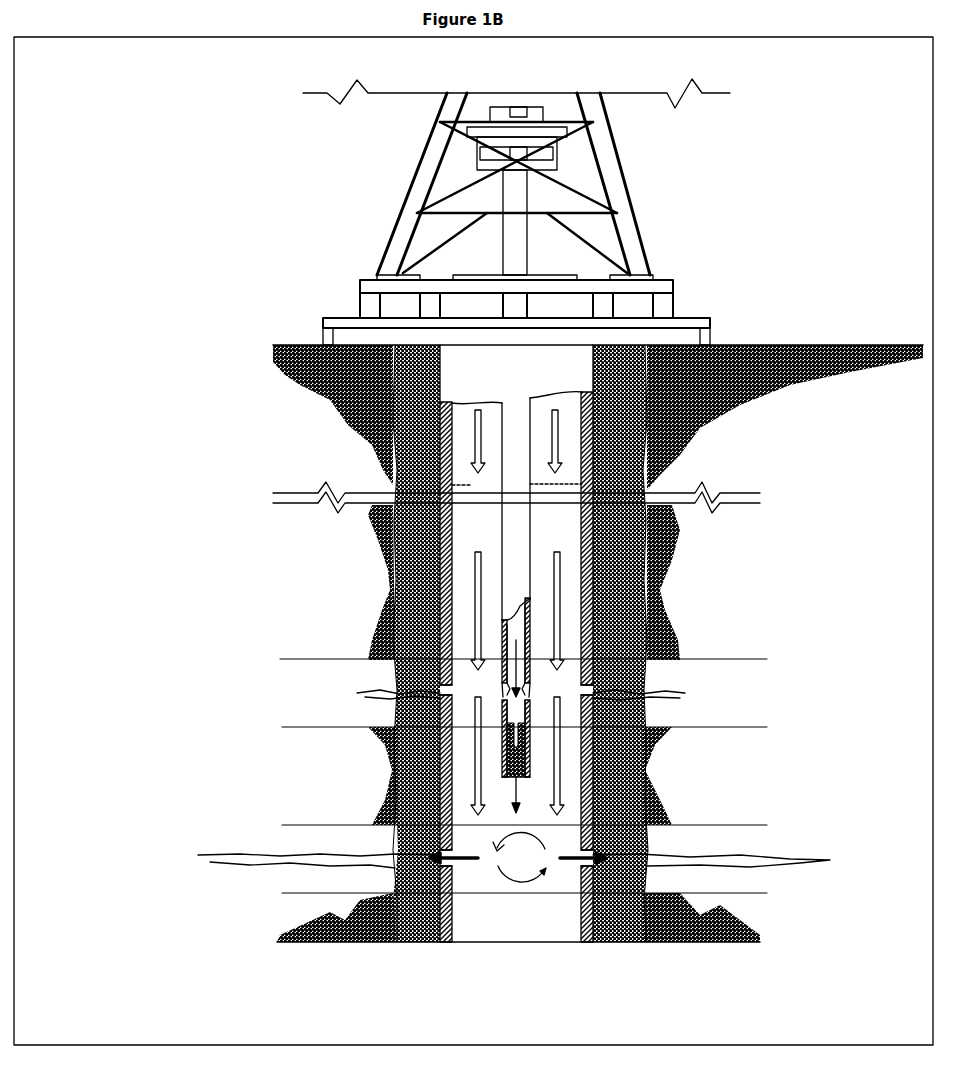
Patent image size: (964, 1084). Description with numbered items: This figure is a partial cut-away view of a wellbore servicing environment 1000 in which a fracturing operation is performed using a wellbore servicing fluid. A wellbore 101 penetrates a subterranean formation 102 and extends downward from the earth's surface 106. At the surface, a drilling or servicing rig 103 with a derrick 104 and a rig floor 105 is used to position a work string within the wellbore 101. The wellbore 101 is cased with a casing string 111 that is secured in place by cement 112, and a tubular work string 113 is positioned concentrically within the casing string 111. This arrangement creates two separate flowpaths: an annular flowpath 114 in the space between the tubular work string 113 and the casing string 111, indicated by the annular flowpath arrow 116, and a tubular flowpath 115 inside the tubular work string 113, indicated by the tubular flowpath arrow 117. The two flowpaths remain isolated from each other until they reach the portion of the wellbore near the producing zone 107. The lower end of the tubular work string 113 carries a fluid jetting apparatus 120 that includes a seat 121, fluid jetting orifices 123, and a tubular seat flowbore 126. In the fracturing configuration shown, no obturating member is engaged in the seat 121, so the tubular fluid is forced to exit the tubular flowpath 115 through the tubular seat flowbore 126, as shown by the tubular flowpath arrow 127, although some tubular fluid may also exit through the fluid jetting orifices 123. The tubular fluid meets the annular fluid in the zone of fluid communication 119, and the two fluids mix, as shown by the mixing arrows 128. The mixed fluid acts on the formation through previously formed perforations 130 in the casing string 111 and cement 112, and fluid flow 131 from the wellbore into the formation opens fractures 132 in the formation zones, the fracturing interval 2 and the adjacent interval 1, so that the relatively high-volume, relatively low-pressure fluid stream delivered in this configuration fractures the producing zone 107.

The well system 1000 is at (222, 129).
The wellbore 101 is at (395, 578).
The subterranean formation 102 is at (822, 428).
The drilling or servicing rig 103 is at (564, 184).
The derrick 104 is at (392, 162).
The rig floor 105 is at (688, 317).
The earth's surface 106 is at (863, 345).
The producing zone 107 is at (190, 800).
The casing string 111 is at (450, 425).
The cement 112 is at (403, 387).
The tubular work string 113 is at (620, 480).
The annular flowpath 114 is at (452, 485).
The tubular flowpath 115 is at (517, 627).
The annular flowpath arrow 116 is at (478, 550).
The tubular flowpath arrow 117 is at (517, 653).
The zone of fluid communication 119 is at (525, 895).
The fluid jetting apparatus 120 is at (530, 733).
The seat 121 is at (502, 772).
The fluid jetting orifices 123 is at (523, 690).
The tubular seat flowbore 126 is at (502, 742).
The tubular flowpath arrow 127 is at (523, 802).
The mixing arrows 128 is at (518, 873).
The perforations 130 is at (367, 693).
The fluid flow into fractures 131 is at (573, 862).
The fractures 132 is at (227, 860).
The first zone 1 is at (524, 860).
The fracturing interval 2 is at (523, 693).